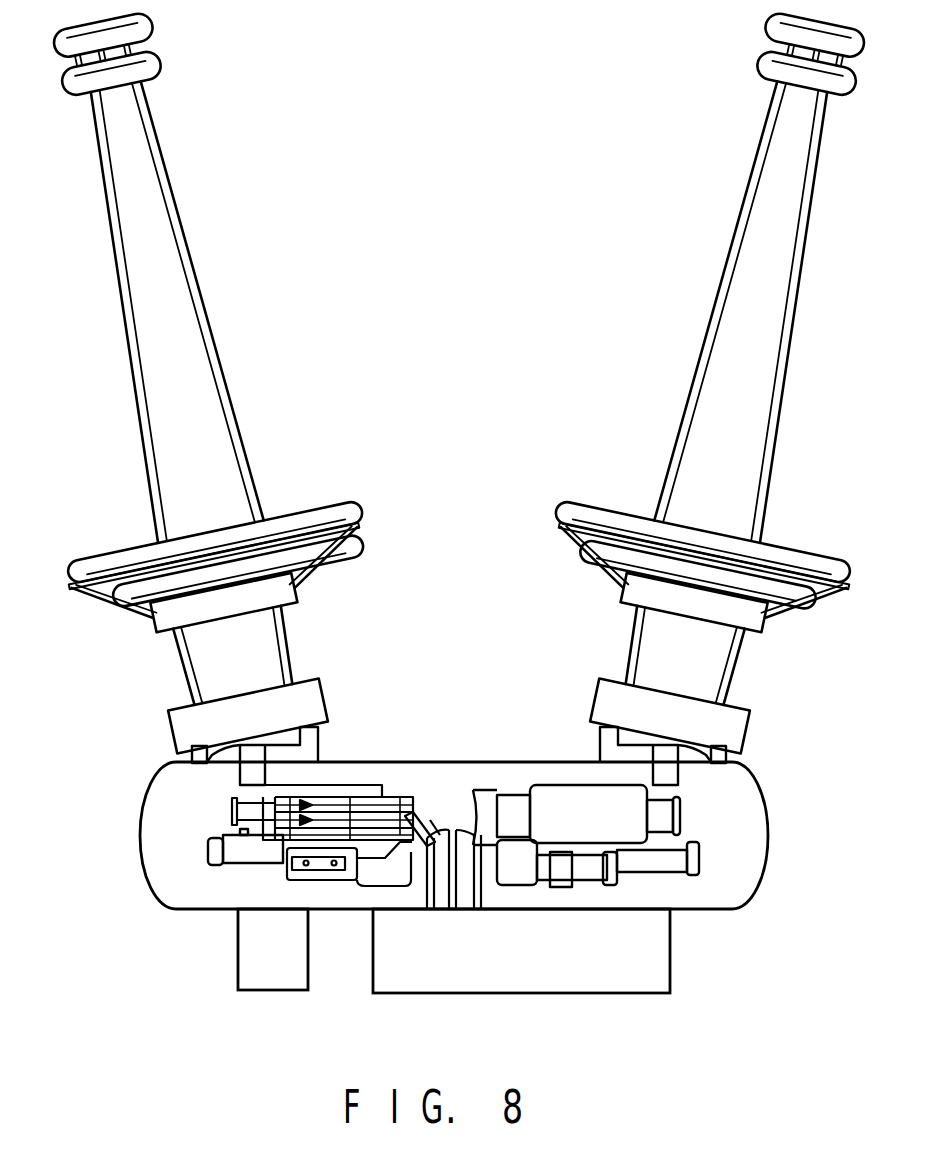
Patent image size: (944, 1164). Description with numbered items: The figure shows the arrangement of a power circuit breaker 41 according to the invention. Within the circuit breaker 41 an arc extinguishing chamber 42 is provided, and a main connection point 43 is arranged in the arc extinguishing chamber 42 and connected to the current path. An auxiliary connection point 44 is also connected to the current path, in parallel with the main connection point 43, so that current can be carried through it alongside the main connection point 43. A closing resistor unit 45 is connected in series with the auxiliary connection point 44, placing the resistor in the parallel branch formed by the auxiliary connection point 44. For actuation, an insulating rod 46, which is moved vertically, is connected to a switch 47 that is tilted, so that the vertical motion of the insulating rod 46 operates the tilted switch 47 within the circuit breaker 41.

The circuit breaker 41 is at (777, 821).
The arc extinguishing chamber 42 is at (556, 797).
The main connection point 43 is at (317, 793).
The auxiliary connection point 44 is at (323, 873).
The closing resistor unit 45 is at (237, 855).
The insulating rod 46 is at (452, 892).
The switch 47 is at (433, 815).